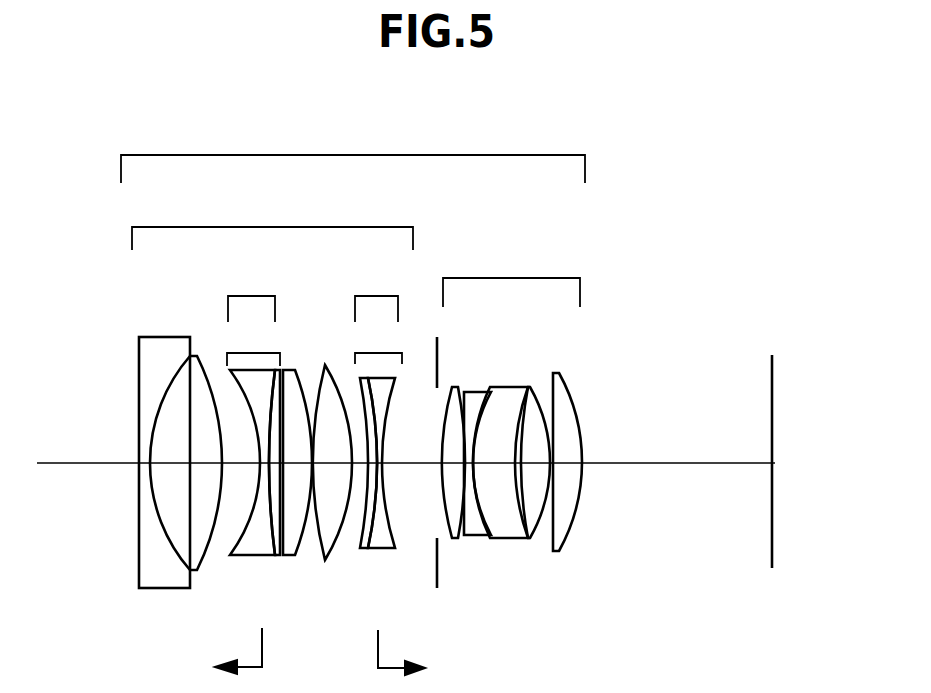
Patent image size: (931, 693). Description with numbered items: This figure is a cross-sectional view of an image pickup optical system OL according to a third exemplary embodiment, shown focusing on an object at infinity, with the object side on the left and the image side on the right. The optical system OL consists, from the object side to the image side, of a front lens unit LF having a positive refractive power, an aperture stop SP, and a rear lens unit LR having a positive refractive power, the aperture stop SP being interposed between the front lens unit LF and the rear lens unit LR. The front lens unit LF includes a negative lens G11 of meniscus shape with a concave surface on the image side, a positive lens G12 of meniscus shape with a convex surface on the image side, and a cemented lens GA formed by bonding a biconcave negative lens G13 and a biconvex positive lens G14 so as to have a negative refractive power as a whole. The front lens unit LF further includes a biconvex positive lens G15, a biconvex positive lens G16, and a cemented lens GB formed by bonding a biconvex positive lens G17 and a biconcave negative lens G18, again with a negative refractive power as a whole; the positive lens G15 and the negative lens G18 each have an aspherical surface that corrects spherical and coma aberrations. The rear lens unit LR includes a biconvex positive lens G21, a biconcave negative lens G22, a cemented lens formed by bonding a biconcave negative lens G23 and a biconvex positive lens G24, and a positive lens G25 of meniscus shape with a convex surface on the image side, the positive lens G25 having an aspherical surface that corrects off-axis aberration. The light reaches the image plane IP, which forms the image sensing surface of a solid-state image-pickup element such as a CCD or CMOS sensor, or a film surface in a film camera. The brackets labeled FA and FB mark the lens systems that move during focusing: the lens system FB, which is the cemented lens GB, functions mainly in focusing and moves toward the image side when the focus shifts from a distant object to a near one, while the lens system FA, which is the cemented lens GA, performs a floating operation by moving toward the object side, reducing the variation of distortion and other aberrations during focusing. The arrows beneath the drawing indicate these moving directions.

The negative lens G11 is at (143, 574).
The positive lens G12 is at (204, 558).
The negative lens G13 is at (242, 556).
The positive lens G14 is at (277, 556).
The positive lens G15 is at (296, 556).
The positive lens G16 is at (322, 562).
The positive lens G17 is at (362, 523).
The negative lens G18 is at (380, 537).
The positive lens G21 is at (449, 523).
The negative lens G22 is at (478, 530).
The negative lens G23 is at (508, 536).
The positive lens G24 is at (533, 532).
The positive lens G25 is at (568, 525).
The aperture stop SP is at (437, 587).
The image plane IP is at (772, 381).
The optical system OL is at (353, 156).
The front lens unit LF is at (272, 225).
The rear lens unit LR is at (511, 280).
The lens system FA is at (251, 296).
The lens system FB is at (376, 296).
The cemented lens GA is at (253, 346).
The cemented lens GB is at (378, 345).